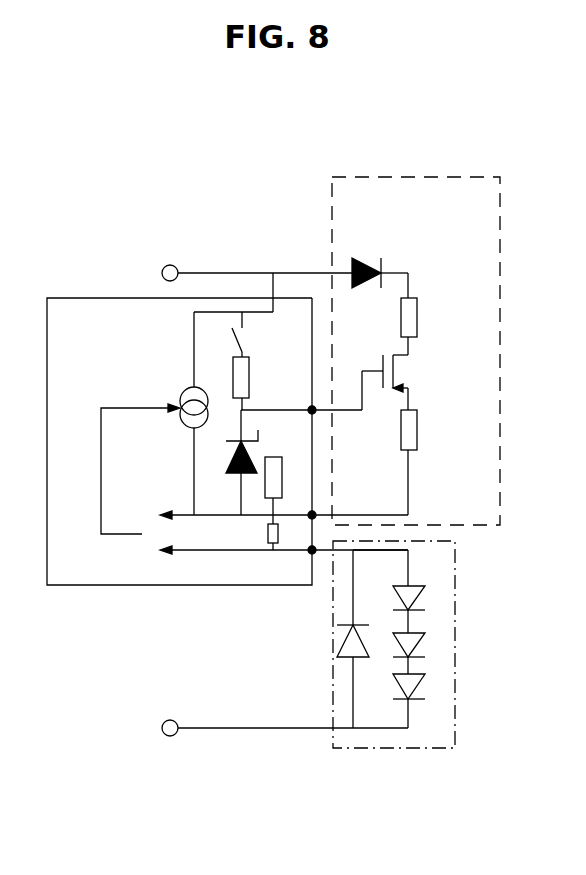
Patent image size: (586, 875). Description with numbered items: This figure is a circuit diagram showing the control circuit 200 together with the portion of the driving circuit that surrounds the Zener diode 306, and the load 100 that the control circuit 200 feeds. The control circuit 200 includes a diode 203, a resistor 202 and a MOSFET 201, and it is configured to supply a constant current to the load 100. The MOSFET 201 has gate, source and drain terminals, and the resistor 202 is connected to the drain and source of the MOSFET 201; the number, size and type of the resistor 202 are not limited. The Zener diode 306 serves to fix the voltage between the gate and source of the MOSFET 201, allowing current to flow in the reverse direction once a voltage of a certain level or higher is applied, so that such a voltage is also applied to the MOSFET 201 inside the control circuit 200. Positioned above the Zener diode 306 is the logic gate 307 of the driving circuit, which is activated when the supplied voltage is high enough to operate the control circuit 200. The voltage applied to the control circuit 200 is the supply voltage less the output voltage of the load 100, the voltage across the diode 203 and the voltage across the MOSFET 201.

The load 100 is at (455, 645).
The control circuit 200 is at (432, 177).
The MOSFET 201 is at (398, 375).
The resistor 202 is at (417, 317).
The diode 203 is at (368, 258).
The Zener diode 306 is at (226, 460).
The logic gate 307 is at (248, 377).